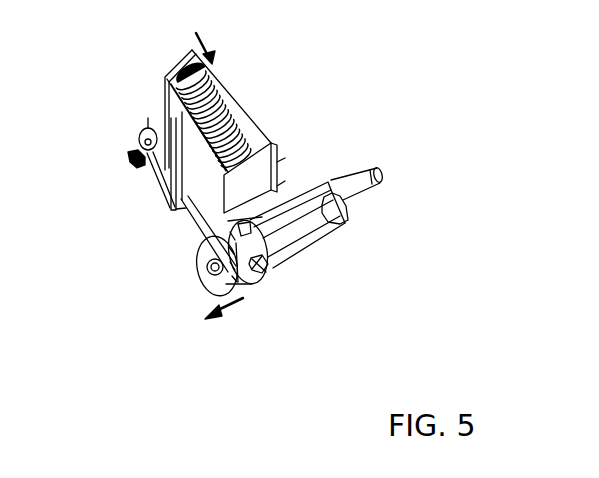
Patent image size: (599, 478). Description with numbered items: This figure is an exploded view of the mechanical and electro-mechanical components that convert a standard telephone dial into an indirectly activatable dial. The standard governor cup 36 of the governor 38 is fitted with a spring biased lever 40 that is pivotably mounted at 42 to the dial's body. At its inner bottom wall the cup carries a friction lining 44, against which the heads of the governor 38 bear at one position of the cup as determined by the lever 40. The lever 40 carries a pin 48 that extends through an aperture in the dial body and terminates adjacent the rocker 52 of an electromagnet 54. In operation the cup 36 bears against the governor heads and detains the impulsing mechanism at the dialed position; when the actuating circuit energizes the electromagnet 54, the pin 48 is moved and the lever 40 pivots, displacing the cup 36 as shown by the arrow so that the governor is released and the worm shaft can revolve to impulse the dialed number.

The governor cup 36 is at (268, 276).
The governor 38 is at (290, 228).
The spring biased lever 40 is at (196, 233).
The pivot 42 is at (140, 150).
The friction lining 44 is at (260, 274).
The pin 48 is at (166, 193).
The rocker 52 is at (166, 103).
The electromagnet 54 is at (205, 112).